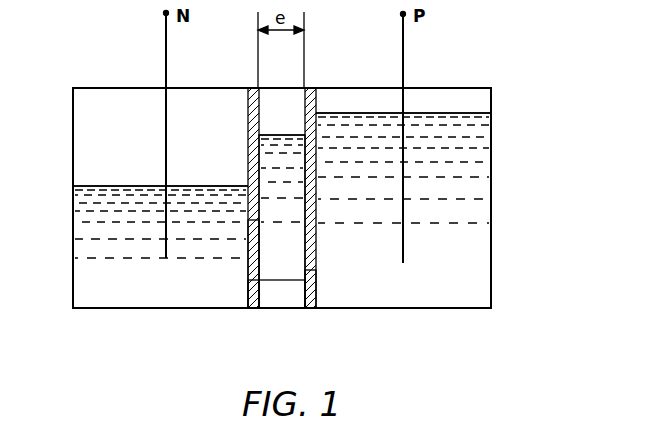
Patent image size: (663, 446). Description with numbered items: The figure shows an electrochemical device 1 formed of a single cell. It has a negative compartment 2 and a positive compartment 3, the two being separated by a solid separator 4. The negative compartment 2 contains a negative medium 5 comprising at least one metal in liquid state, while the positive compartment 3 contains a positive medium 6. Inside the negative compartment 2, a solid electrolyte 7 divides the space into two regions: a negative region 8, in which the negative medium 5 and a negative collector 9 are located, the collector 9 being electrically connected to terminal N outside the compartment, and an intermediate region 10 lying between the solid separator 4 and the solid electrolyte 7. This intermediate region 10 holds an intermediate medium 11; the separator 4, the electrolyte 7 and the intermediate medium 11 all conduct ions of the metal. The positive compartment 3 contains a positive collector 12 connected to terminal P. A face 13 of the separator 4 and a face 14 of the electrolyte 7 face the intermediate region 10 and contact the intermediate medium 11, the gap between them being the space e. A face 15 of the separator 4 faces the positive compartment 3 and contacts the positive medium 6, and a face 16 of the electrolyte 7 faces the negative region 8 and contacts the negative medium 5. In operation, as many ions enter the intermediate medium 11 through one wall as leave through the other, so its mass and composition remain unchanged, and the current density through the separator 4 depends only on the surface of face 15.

The electrochemical device 1 is at (520, 91).
The negative compartment 2 is at (73, 278).
The positive compartment 3 is at (491, 176).
The solid separator 4 is at (312, 260).
The negative medium 5 is at (100, 231).
The positive medium 6 is at (470, 130).
The solid electrolyte 7 is at (256, 308).
The negative region 8 is at (95, 203).
The negative collector 9 is at (166, 126).
The intermediate region 10 is at (283, 250).
The intermediate medium 11 is at (290, 298).
The positive collector 12 is at (405, 199).
The face of the solid separator 13 is at (304, 195).
The face of the solid electrolyte 14 is at (257, 298).
The face of the solid separator 15 is at (316, 287).
The face of the solid electrolyte 16 is at (248, 232).